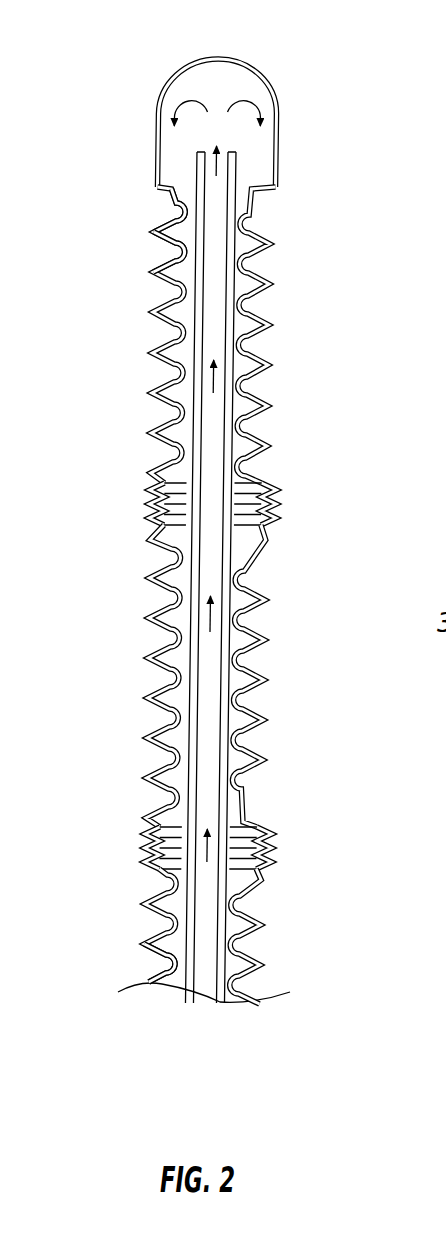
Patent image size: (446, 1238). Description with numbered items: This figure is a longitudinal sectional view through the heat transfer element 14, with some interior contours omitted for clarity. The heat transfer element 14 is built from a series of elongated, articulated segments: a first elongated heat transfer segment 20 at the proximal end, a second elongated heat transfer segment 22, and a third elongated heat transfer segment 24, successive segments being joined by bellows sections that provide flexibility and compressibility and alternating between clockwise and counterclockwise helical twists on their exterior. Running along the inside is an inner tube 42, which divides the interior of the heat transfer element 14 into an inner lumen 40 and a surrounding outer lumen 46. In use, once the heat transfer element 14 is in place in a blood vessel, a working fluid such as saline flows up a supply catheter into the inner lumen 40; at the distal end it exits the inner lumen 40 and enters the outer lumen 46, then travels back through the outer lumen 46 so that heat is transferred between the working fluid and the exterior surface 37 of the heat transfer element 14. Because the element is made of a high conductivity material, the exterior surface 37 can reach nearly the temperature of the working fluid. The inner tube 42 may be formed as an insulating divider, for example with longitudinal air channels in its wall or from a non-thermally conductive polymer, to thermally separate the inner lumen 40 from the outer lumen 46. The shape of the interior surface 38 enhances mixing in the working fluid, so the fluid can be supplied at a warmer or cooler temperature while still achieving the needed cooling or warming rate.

The heat transfer element 14 is at (334, 80).
The first elongated heat transfer segment 20 is at (101, 913).
The second elongated heat transfer segment 22 is at (106, 667).
The third elongated heat transfer segment 24 is at (111, 351).
The exterior surface 37 is at (163, 220).
The interior surface 38 is at (165, 272).
The inner lumen 40 is at (210, 998).
The inner tube 42 is at (237, 152).
The outer lumen 46 is at (177, 986).